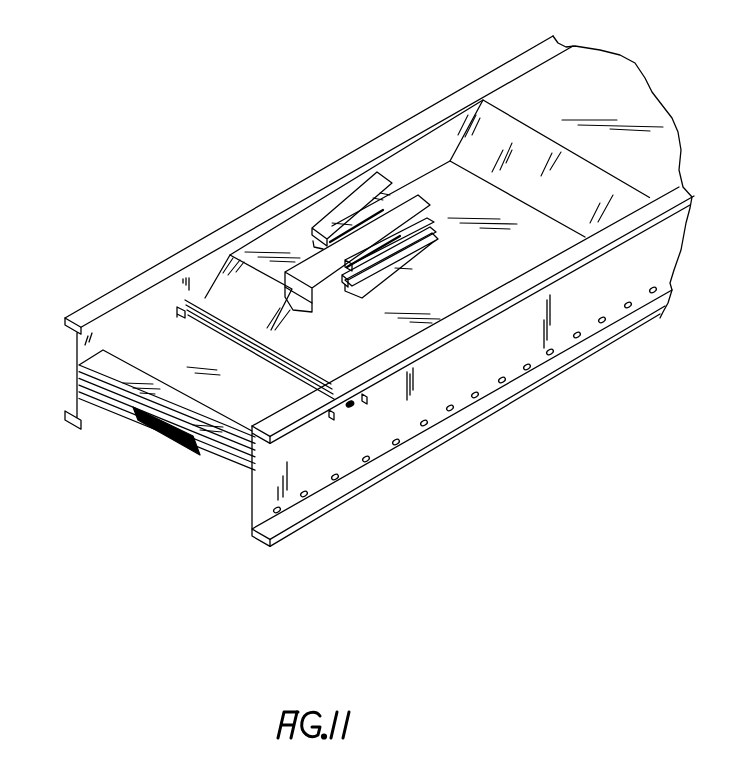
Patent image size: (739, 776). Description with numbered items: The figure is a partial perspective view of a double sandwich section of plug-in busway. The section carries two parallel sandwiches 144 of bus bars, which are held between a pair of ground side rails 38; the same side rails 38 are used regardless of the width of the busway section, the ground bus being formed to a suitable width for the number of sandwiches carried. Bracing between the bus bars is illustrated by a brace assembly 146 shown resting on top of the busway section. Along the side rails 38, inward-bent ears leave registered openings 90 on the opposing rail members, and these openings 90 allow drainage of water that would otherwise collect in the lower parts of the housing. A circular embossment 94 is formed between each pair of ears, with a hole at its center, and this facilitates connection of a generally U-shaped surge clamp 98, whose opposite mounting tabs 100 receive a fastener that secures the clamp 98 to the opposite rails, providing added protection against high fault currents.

The ground side rails 38 is at (80, 322).
The mounting tabs 100 is at (103, 350).
The parallel sandwiches of bus bars 144 is at (102, 397).
The surge clamp 98 is at (175, 414).
The brace assembly 146 is at (338, 211).
The openings 90 is at (335, 418).
The circular embossment 94 is at (350, 406).